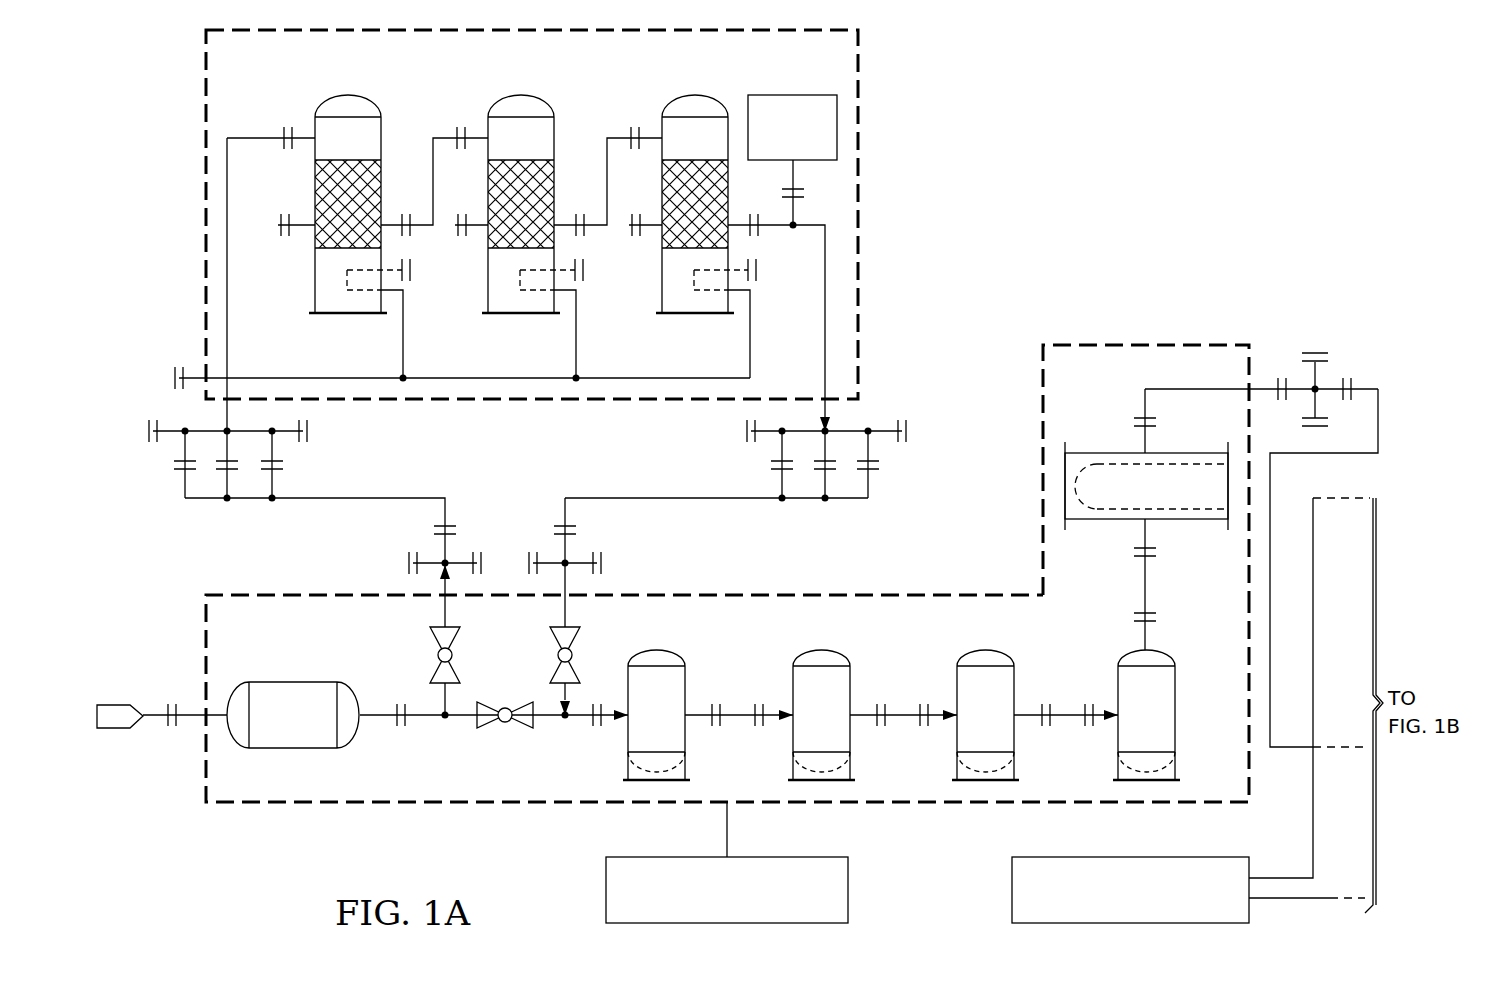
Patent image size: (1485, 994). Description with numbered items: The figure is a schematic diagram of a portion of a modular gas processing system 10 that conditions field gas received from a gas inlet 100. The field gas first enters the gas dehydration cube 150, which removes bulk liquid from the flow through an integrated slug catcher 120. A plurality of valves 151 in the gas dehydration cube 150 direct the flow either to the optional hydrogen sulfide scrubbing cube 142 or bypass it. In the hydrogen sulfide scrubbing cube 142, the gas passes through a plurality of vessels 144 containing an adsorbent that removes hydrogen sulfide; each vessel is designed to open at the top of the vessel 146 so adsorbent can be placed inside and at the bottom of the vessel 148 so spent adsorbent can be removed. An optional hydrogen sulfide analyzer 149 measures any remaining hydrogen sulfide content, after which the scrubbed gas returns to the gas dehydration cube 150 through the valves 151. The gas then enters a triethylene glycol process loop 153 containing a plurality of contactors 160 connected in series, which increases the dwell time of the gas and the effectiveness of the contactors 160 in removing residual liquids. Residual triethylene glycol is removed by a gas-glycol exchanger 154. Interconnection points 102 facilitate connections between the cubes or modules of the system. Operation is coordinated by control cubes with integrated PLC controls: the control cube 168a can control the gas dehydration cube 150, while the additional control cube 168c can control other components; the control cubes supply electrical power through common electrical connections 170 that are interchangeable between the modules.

The gas processing system 10 is at (1212, 87).
The gas inlet 100 is at (106, 730).
The interconnection points 102 is at (176, 466).
The integrated slug catcher 120 is at (273, 728).
The hydrogen sulfide scrubbing cube 142 is at (200, 160).
The vessels 144 is at (347, 316).
The top of the vessel 146 is at (296, 100).
The bottom of the vessel 148 is at (318, 282).
The hydrogen sulfide analyzer 149 is at (773, 142).
The gas dehydration cube 150 is at (571, 810).
The valves 151 is at (432, 668).
The triethylene glycol process loop 153 is at (1038, 628).
The gas-glycol exchanger 154 is at (1185, 520).
The contactors 160 is at (636, 728).
The control cube 168a is at (701, 905).
The control cube 168c is at (1104, 905).
The common electrical connections 170 is at (727, 828).